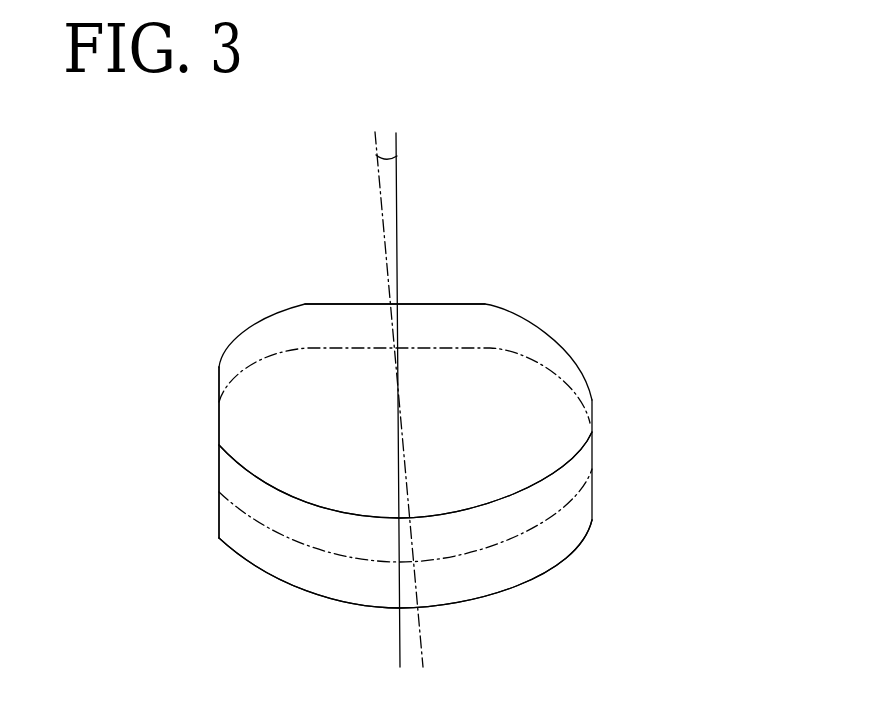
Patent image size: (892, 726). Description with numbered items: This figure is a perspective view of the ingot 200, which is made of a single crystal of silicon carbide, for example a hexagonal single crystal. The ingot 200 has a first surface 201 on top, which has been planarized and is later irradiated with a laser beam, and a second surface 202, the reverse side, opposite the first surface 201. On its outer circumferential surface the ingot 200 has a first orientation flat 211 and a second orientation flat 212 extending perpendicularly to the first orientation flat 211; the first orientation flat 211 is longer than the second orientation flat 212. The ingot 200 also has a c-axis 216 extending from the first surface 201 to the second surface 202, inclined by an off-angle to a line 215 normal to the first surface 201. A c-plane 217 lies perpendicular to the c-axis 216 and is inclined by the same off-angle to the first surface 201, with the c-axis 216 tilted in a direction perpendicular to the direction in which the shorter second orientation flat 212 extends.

The ingot 200 is at (575, 305).
The first surface 201 is at (550, 442).
The second surface 202 is at (483, 598).
The first orientation flat 211 is at (456, 304).
The second orientation flat 212 is at (219, 397).
The line normal to the first surface 215 is at (398, 178).
The c-axis 216 is at (376, 180).
The c-plane 217 is at (275, 537).